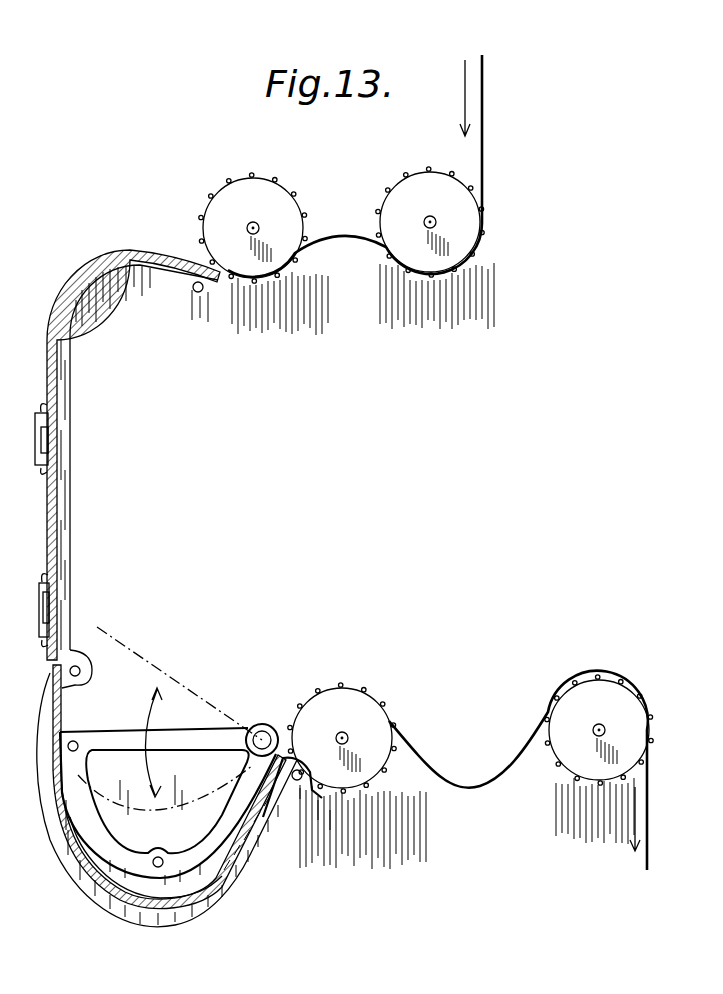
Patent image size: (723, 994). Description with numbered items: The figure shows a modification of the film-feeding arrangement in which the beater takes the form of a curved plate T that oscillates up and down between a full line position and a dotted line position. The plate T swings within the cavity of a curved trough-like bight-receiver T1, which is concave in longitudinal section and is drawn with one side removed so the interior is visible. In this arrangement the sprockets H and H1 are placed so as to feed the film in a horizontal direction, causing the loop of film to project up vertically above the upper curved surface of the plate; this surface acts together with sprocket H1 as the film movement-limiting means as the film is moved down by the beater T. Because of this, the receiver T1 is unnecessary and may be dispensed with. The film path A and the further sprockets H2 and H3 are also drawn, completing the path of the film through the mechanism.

The sprocket H is at (425, 190).
The sprocket H1 is at (262, 197).
The toothed roller H2 is at (357, 712).
The toothed roller H3 is at (592, 704).
The web / strip A is at (479, 72).
The curved plate T is at (217, 840).
The curved trough-like bight-receiver T1 is at (143, 908).